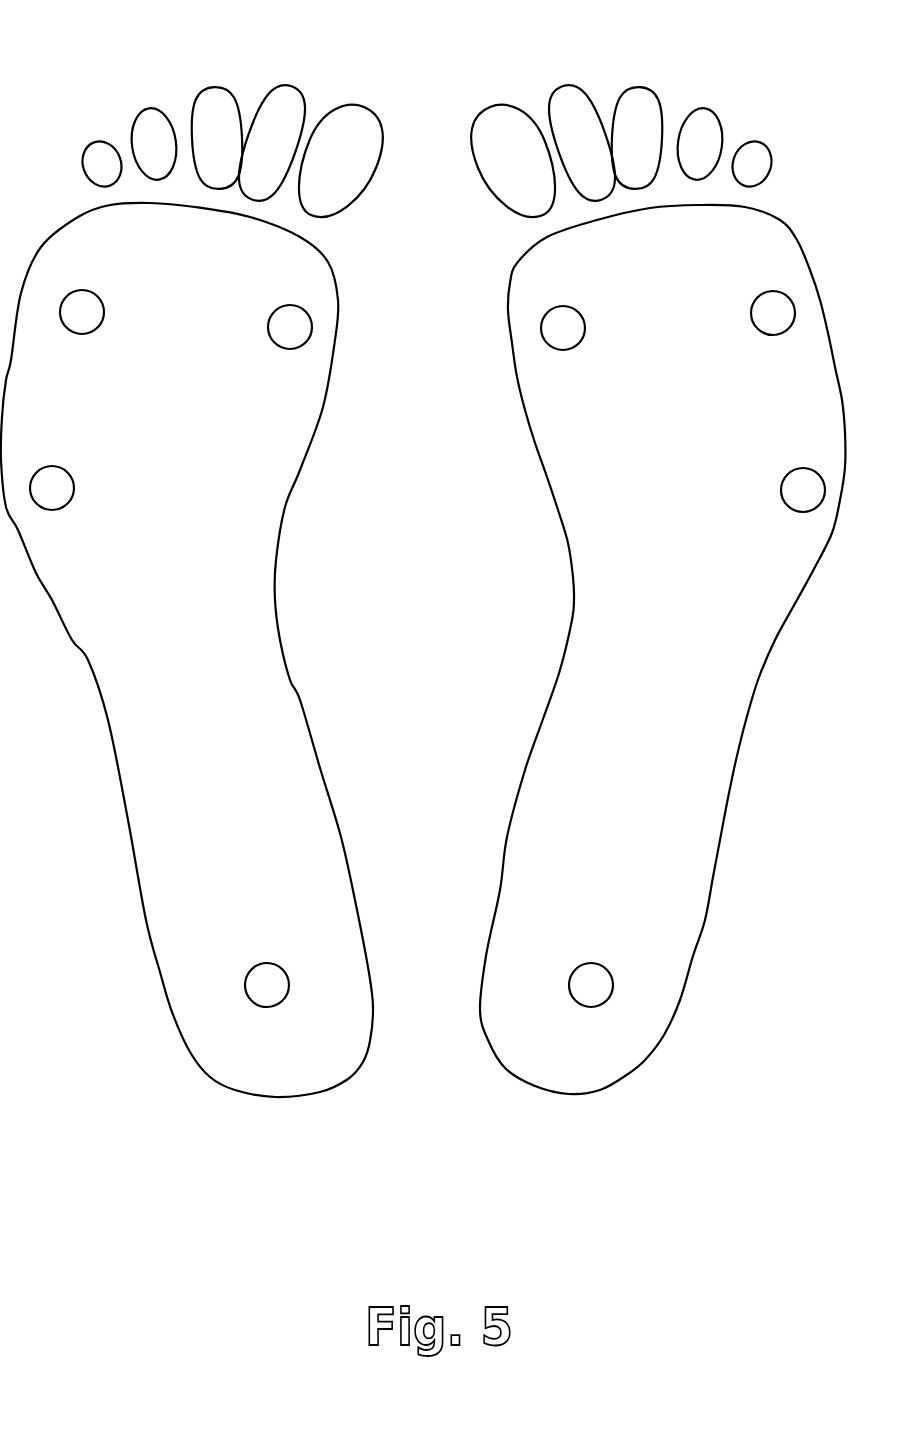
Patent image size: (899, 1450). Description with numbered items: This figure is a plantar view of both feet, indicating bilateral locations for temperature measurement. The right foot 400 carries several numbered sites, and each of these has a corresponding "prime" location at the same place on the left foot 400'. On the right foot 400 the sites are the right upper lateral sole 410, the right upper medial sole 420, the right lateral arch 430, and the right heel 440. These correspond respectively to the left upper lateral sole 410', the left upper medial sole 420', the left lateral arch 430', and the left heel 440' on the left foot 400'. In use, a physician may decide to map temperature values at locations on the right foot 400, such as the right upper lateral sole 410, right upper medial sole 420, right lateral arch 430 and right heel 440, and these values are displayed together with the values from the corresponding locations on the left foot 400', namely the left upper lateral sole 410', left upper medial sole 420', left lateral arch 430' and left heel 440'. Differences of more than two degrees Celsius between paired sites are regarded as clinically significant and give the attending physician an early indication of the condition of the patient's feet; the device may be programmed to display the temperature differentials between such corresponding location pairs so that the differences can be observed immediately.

The right foot 400 is at (198, 658).
The right upper lateral sole 410 is at (115, 292).
The right upper medial sole 420 is at (252, 360).
The right lateral arch 430 is at (80, 513).
The right heel 440 is at (230, 962).
The left foot 400' is at (652, 655).
The left upper lateral sole 410' is at (731, 292).
The left upper medial sole 420' is at (599, 354).
The left lateral arch 430' is at (771, 520).
The left heel 440' is at (626, 959).